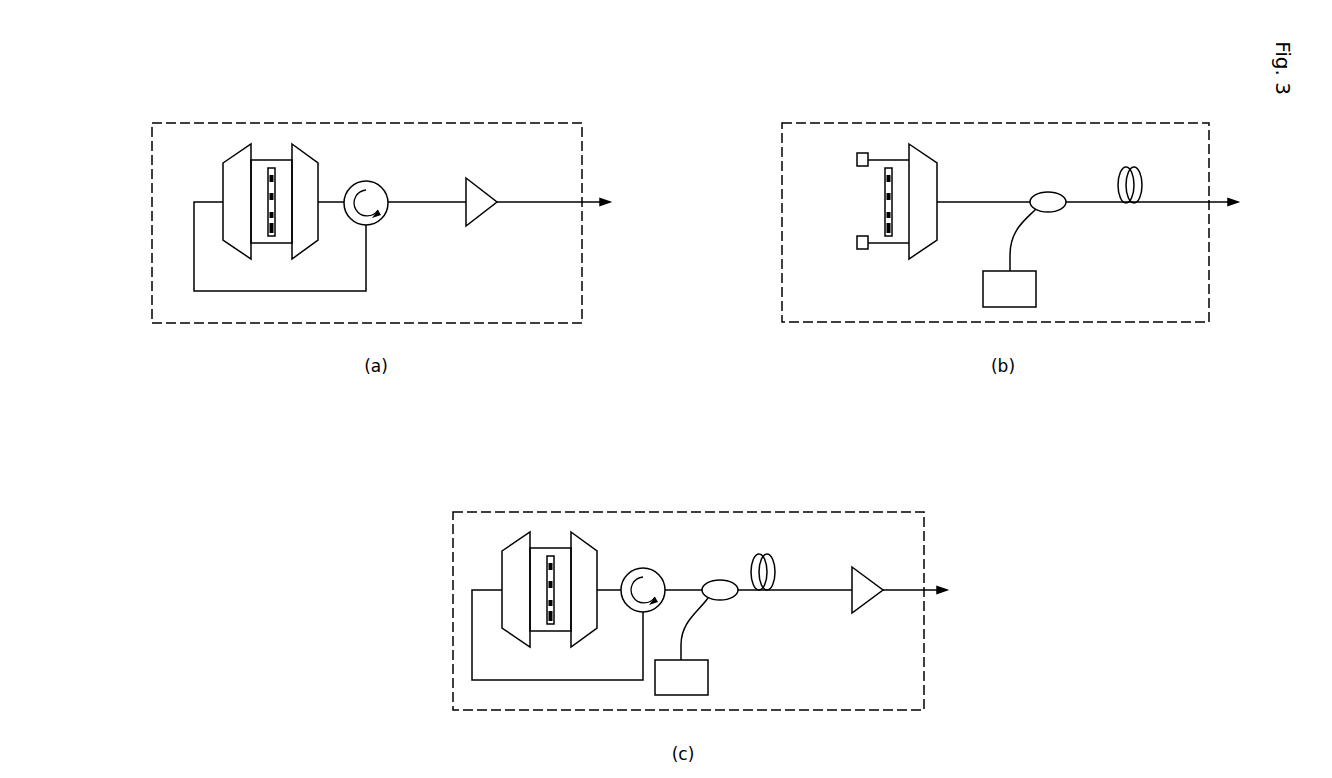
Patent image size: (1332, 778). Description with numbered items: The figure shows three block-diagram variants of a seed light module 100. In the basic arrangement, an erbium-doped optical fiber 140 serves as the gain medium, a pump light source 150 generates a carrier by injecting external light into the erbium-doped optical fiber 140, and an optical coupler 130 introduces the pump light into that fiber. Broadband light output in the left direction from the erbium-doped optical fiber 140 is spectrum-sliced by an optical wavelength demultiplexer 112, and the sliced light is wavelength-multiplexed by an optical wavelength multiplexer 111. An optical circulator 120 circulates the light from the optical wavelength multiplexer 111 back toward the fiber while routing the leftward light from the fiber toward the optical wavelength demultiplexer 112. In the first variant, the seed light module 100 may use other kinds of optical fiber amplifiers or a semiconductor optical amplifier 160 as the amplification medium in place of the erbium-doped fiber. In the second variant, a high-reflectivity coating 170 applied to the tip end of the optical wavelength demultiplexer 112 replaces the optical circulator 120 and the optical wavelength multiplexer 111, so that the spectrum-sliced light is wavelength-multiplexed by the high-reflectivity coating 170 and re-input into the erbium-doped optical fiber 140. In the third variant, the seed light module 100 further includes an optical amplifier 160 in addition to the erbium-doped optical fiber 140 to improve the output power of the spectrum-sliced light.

The seed light module 100 is at (405, 123).
The optical wavelength multiplexer 111 is at (232, 157).
The optical wavelength demultiplexer 112 is at (305, 151).
The optical circulator 120 is at (362, 180).
The optical coupler 130 is at (1042, 192).
The erbium-doped optical fiber 140 is at (1132, 167).
The pump light source 150 is at (1036, 289).
The optical amplifier 160 is at (470, 182).
The high-reflectivity coating 170 is at (857, 160).